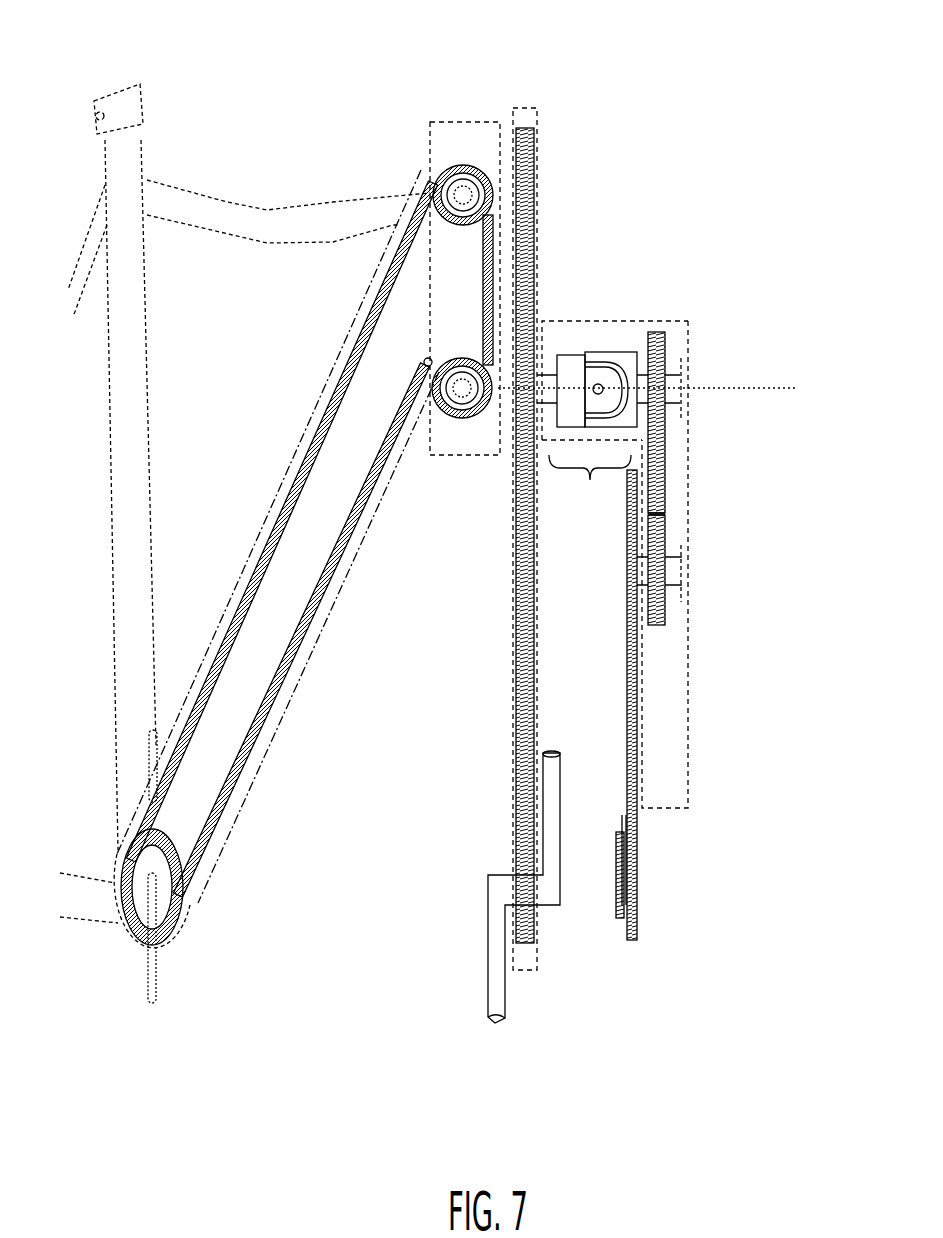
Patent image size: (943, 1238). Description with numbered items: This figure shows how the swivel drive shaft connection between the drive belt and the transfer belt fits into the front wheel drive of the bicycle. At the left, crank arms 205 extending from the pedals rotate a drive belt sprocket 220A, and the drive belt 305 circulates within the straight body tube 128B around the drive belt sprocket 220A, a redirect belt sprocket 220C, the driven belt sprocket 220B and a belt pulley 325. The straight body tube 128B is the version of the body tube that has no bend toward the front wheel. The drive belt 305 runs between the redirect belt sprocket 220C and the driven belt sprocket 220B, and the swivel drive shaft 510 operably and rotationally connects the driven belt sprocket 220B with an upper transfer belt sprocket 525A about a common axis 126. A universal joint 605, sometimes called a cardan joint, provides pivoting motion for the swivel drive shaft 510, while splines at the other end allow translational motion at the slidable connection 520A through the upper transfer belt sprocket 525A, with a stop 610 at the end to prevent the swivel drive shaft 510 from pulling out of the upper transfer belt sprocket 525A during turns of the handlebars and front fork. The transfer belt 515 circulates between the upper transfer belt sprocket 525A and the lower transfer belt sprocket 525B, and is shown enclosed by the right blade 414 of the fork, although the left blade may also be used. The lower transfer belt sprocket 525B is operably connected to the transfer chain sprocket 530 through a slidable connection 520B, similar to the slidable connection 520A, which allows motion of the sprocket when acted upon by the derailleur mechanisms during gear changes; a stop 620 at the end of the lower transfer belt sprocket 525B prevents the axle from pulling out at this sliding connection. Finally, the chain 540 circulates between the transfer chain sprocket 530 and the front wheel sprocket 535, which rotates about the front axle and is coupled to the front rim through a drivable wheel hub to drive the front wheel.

The axis of rotation 126 is at (664, 384).
The straight body tube 128B is at (277, 723).
The crank arms 205 is at (155, 1000).
The drive belt sprocket 220A is at (188, 860).
The driven belt sprocket 220B is at (467, 446).
The redirect belt sprocket 220C is at (460, 165).
The drive belt 305 is at (283, 487).
The belt pulley 325 is at (428, 368).
The right blade 414 is at (688, 760).
The swivel drive shaft 510 is at (590, 494).
The transfer belt 515 is at (662, 488).
The slidable connection 520A is at (667, 448).
The slidable connection 520B is at (664, 616).
The upper transfer belt sprocket 525A is at (667, 350).
The lower transfer belt sprocket 525B is at (664, 626).
The transfer chain sprocket 530 is at (625, 627).
The front wheel sprocket 535 is at (616, 880).
The chain 540 is at (626, 760).
The universal joint 605 is at (610, 350).
The stop 610 is at (678, 408).
The stop 620 is at (682, 585).